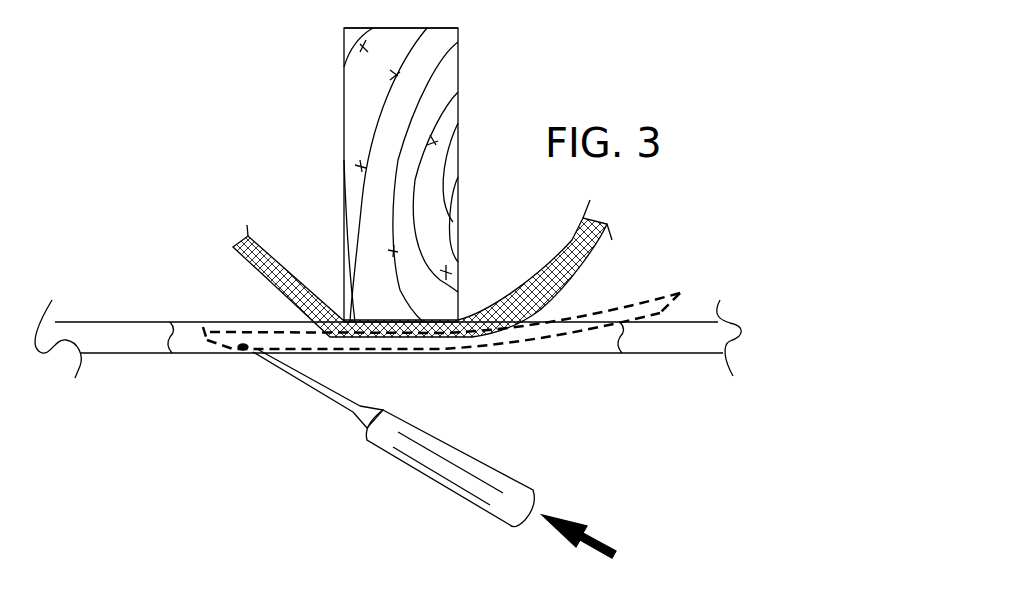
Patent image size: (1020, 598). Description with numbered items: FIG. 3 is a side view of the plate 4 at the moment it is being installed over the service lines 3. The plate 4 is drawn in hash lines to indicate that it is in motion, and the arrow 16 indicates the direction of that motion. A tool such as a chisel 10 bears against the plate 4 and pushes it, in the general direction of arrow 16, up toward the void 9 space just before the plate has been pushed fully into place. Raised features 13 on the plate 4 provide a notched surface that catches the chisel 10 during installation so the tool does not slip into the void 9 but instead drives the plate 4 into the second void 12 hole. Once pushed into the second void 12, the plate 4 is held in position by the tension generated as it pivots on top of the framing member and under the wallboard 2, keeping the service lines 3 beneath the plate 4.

The wallboard 2 is at (672, 349).
The service lines 3 is at (593, 250).
The plate 4 is at (540, 337).
The void 9 is at (818, 191).
The chisel 10 is at (461, 450).
The second void 12 is at (250, 132).
The raised features 13 is at (246, 355).
The arrow 16 is at (612, 539).